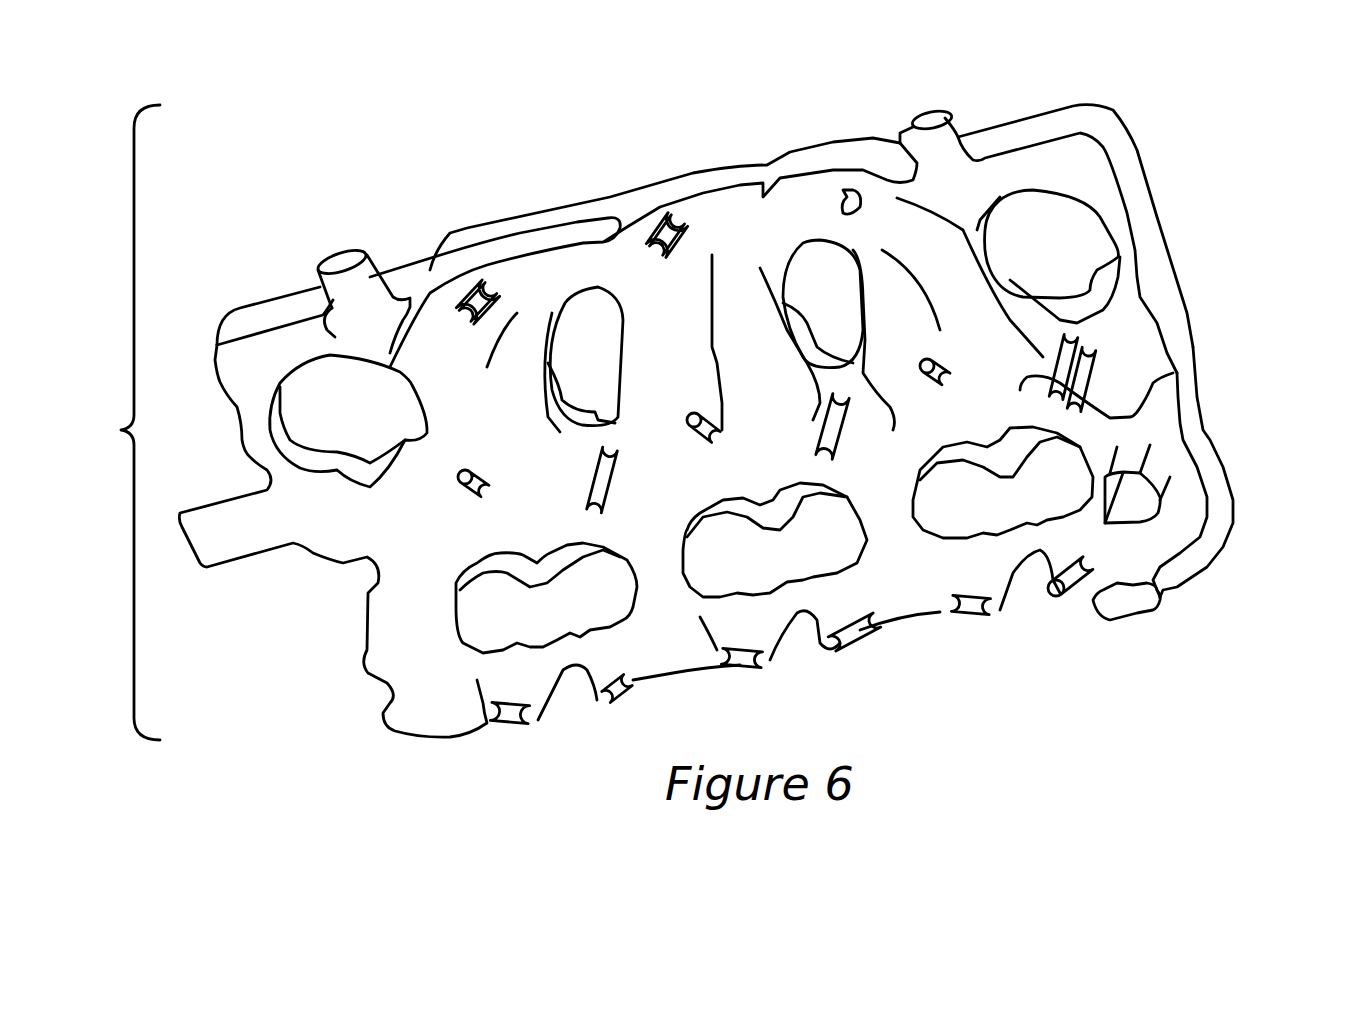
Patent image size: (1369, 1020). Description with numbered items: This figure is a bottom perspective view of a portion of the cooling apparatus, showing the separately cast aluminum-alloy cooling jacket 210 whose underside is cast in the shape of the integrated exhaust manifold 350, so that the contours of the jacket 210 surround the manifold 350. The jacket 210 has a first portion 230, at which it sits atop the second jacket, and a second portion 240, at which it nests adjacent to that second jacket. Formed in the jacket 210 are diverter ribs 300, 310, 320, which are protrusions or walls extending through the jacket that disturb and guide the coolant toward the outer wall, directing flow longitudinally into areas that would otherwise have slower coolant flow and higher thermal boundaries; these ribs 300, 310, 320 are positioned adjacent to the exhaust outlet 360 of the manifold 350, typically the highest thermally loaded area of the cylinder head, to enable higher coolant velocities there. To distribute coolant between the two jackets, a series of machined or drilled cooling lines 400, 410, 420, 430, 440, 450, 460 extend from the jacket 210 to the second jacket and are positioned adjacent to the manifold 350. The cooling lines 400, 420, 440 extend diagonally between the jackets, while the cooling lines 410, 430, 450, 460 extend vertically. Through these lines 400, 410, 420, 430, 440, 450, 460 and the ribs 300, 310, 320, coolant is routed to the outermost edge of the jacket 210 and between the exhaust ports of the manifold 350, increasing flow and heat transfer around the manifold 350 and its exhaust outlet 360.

The cooling jacket 210 is at (108, 422).
The first portion 230 is at (1173, 168).
The second portion 240 is at (1240, 425).
The diverter rib 300 is at (467, 277).
The diverter rib 310 is at (677, 212).
The diverter rib 320 is at (843, 193).
The integrated exhaust manifold 350 is at (695, 338).
The exhaust outlet 360 is at (742, 167).
The cooling line 400 is at (467, 497).
The cooling line 410 is at (607, 493).
The cooling line 420 is at (703, 440).
The cooling line 430 is at (833, 440).
The cooling line 440 is at (927, 387).
The cooling line 450 is at (1020, 390).
The cooling line 460 is at (1173, 373).